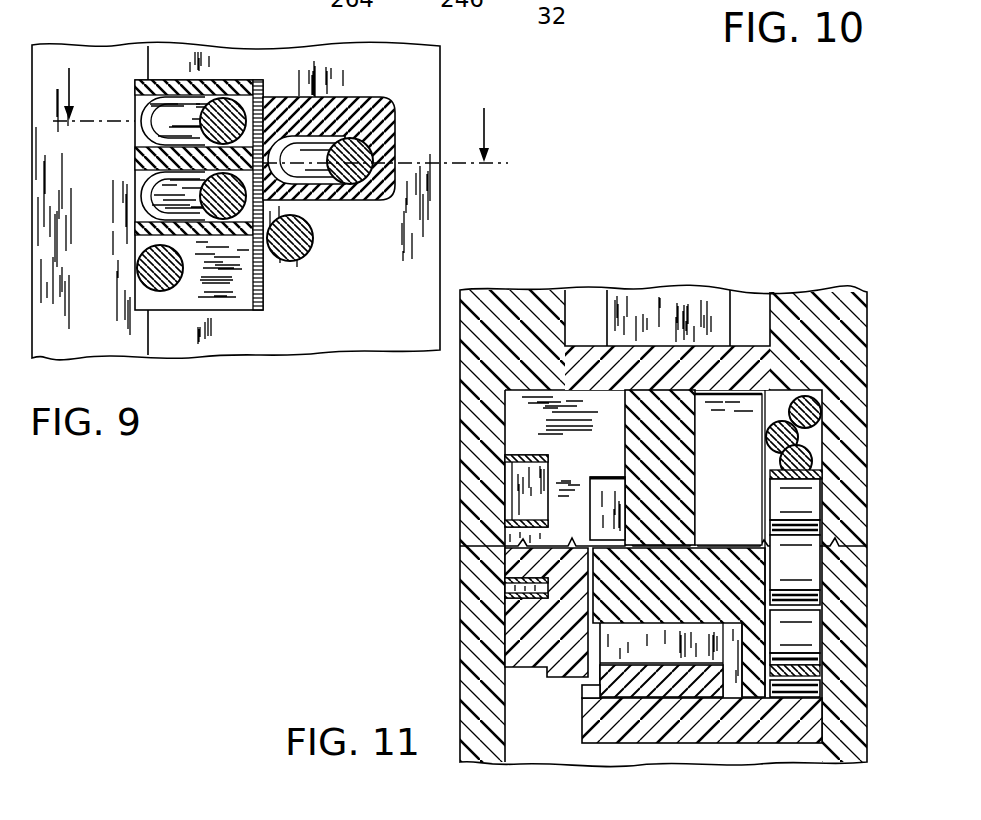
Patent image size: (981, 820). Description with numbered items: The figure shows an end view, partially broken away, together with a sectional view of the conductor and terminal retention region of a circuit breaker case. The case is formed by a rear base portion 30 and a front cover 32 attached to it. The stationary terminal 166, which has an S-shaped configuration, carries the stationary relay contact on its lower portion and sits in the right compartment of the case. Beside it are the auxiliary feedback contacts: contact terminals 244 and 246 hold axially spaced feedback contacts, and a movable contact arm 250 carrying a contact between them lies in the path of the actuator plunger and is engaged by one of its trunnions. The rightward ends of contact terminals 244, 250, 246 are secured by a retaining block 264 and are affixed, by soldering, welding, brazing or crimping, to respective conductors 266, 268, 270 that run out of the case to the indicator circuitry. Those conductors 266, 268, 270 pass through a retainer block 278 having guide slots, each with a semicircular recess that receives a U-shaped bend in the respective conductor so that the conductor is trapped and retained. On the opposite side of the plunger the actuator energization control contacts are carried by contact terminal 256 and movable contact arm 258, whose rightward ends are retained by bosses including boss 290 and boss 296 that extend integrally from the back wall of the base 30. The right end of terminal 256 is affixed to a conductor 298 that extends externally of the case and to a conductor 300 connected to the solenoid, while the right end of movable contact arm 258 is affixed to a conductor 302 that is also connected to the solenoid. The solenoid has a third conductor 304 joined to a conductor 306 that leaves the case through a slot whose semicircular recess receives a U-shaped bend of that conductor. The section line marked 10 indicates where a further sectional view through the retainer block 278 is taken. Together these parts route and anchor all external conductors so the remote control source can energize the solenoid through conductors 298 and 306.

In FIG. 9, the section line 10- 10 is at (280, 131).
In FIG. 9, the rear base portion 30 is at (280, 50).
In FIG. 11, the rear base portion 30 is at (838, 292).
In FIG. 9, the front cover 32 is at (118, 58).
In FIG. 11, the front cover 32 is at (530, 296).
In FIG. 9, the conductor 266 is at (138, 282).
In FIG. 9, the conductor 268 is at (135, 180).
In FIG. 9, the conductor 270 is at (135, 110).
In FIG. 9, the retainer block 278 is at (237, 318).
In FIG. 11, the retainer block 278 is at (583, 707).
In FIG. 9, the conductor 298 is at (305, 260).
In FIG. 9, the conductor 306 is at (348, 104).
In FIG. 11, the stationary terminal 166 is at (661, 660).
In FIG. 11, the contact terminal 244 is at (512, 589).
In FIG. 11, the contact terminal 246 is at (527, 455).
In FIG. 11, the movable contact arm 250 is at (522, 517).
In FIG. 11, the contact terminal 256 is at (795, 677).
In FIG. 11, the movable contact arm 258 is at (770, 476).
In FIG. 11, the retaining block 264 is at (515, 650).
In FIG. 11, the boss 290 is at (726, 590).
In FIG. 11, the boss 296 is at (783, 498).
In FIG. 11, the conductor 300 is at (808, 390).
In FIG. 11, the conductor 302 is at (768, 456).
In FIG. 11, the third conductor 304 is at (770, 428).